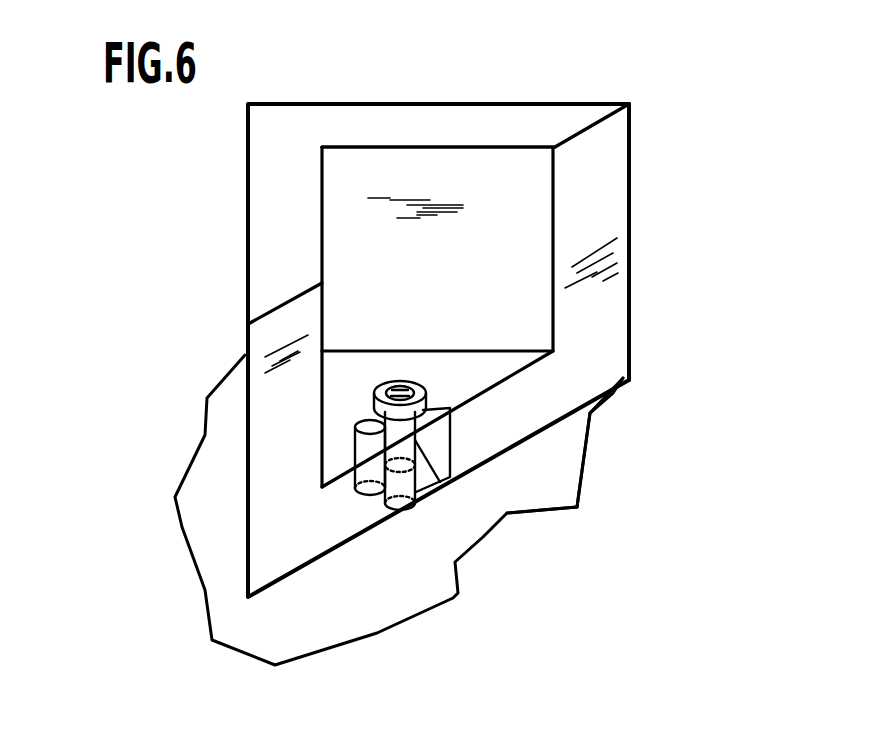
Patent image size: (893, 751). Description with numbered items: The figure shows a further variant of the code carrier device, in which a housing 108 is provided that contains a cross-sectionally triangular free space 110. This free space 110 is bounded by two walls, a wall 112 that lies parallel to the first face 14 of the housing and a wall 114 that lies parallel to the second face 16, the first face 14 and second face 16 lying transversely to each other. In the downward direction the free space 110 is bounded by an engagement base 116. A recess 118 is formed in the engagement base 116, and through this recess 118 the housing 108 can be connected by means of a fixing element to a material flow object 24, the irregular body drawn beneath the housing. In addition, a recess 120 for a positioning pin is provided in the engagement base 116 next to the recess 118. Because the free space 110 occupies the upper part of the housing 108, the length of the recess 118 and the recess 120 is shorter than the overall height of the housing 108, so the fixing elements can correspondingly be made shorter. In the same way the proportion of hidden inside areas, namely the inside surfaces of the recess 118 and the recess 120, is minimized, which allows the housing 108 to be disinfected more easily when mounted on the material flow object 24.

The first face 14 is at (245, 418).
The second face 16 is at (587, 103).
The material flow object 24 is at (220, 550).
The housing 108 is at (480, 133).
The free space 110 is at (510, 233).
The wall 112 is at (323, 443).
The wall 114 is at (517, 337).
The engagement base 116 is at (603, 410).
The recess 118 is at (577, 507).
The recess 120 is at (370, 487).